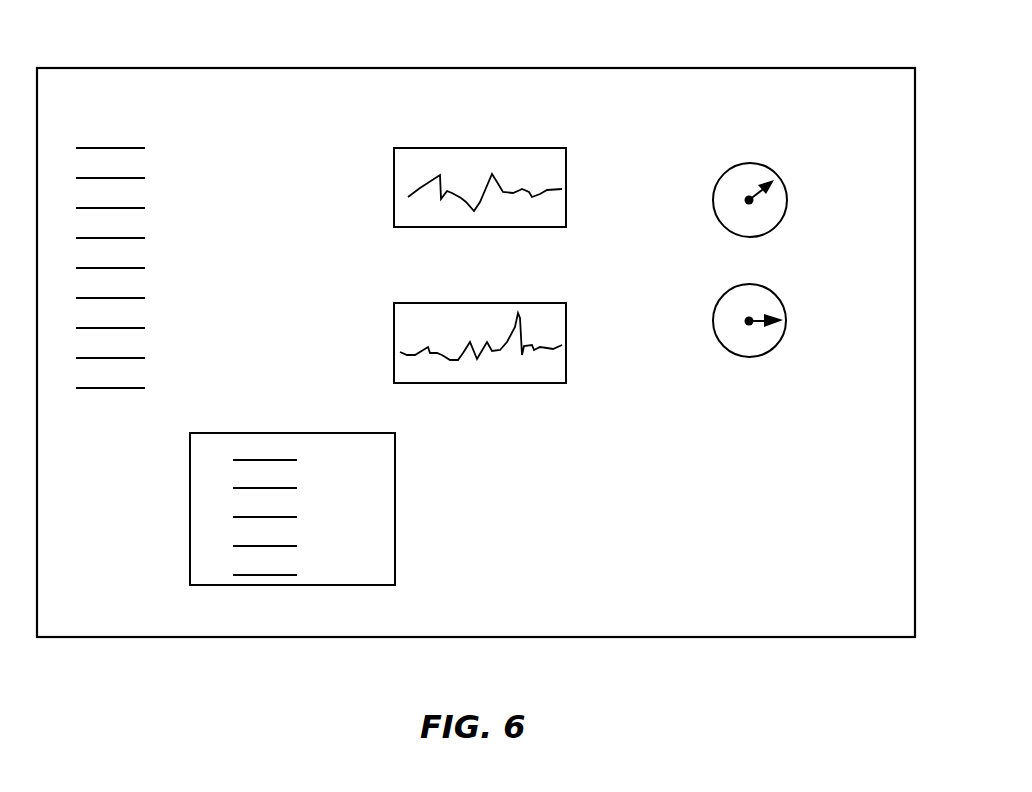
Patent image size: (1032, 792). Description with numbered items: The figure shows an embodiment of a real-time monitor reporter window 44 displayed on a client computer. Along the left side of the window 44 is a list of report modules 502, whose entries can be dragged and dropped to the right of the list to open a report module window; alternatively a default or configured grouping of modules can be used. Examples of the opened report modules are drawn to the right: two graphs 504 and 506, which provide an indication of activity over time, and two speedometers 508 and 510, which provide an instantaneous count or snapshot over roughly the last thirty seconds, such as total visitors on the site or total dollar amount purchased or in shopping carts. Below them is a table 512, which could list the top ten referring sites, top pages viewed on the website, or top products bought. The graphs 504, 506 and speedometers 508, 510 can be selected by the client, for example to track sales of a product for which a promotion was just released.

The real-time monitor reporter window 44 is at (723, 56).
The list of report modules 502 is at (162, 157).
The graph 504 is at (522, 147).
The graph 506 is at (520, 302).
The speedometer 508 is at (765, 165).
The speedometer 510 is at (764, 287).
The table 512 is at (396, 477).